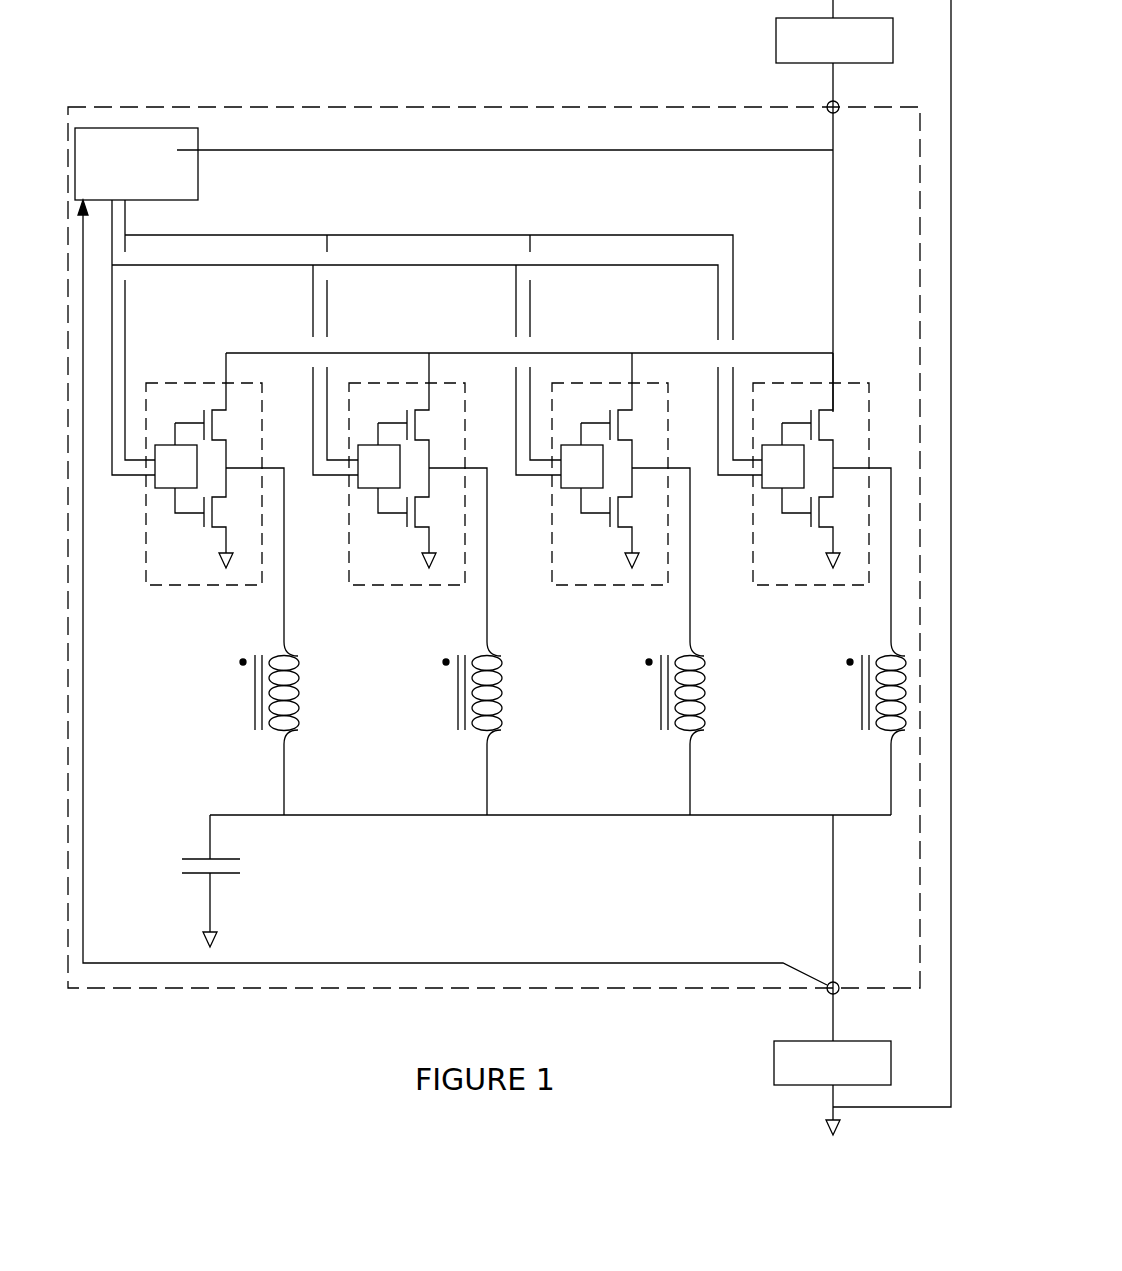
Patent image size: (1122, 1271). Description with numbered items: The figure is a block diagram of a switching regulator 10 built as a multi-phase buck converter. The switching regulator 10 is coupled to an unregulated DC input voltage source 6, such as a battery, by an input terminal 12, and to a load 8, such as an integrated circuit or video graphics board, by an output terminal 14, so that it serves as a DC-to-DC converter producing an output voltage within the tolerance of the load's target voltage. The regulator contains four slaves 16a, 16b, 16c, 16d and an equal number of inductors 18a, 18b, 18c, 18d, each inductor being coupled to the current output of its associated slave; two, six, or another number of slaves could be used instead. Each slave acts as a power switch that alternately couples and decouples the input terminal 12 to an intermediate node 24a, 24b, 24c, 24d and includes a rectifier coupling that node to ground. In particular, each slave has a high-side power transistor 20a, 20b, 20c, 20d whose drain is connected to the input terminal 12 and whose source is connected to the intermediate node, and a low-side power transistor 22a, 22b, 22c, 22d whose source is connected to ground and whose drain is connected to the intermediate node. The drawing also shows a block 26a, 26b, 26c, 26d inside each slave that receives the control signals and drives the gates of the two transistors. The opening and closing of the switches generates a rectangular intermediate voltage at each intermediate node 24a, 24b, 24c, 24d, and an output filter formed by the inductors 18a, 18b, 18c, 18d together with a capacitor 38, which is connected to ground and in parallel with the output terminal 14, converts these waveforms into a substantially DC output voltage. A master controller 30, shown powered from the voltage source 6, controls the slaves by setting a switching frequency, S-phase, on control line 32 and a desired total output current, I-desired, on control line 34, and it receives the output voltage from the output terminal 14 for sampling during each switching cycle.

The input voltage source 6 is at (776, 49).
The load 8 is at (774, 1065).
The switching regulator 10 is at (472, 107).
The input terminal 12 is at (838, 112).
The output terminal 14 is at (828, 980).
The slave 16a is at (167, 585).
The slave 16b is at (401, 507).
The slave 16c is at (604, 507).
The slave 16d is at (805, 507).
The inductor 18a is at (270, 728).
The inductor 18b is at (466, 728).
The inductor 18c is at (669, 728).
The inductor 18d is at (870, 728).
The high-side power transistor 20a is at (203, 415).
The high-side power transistor 20b is at (394, 410).
The high-side power transistor 20c is at (597, 410).
The high-side power transistor 20d is at (798, 410).
The low-side power transistor 22a is at (203, 520).
The low-side power transistor 22b is at (400, 518).
The low-side power transistor 22c is at (603, 518).
The low-side power transistor 22d is at (804, 518).
The intermediate node 24a is at (228, 463).
The intermediate node 24b is at (458, 536).
The intermediate node 24c is at (661, 536).
The intermediate node 24d is at (862, 536).
The phase driver a 26a is at (176, 469).
The phase driver b 26b is at (379, 469).
The phase driver c 26c is at (582, 469).
The phase driver d 26d is at (783, 469).
The master controller 30 is at (175, 127).
The control line 32 is at (620, 235).
The control line 34 is at (632, 267).
The capacitor 38 is at (188, 875).